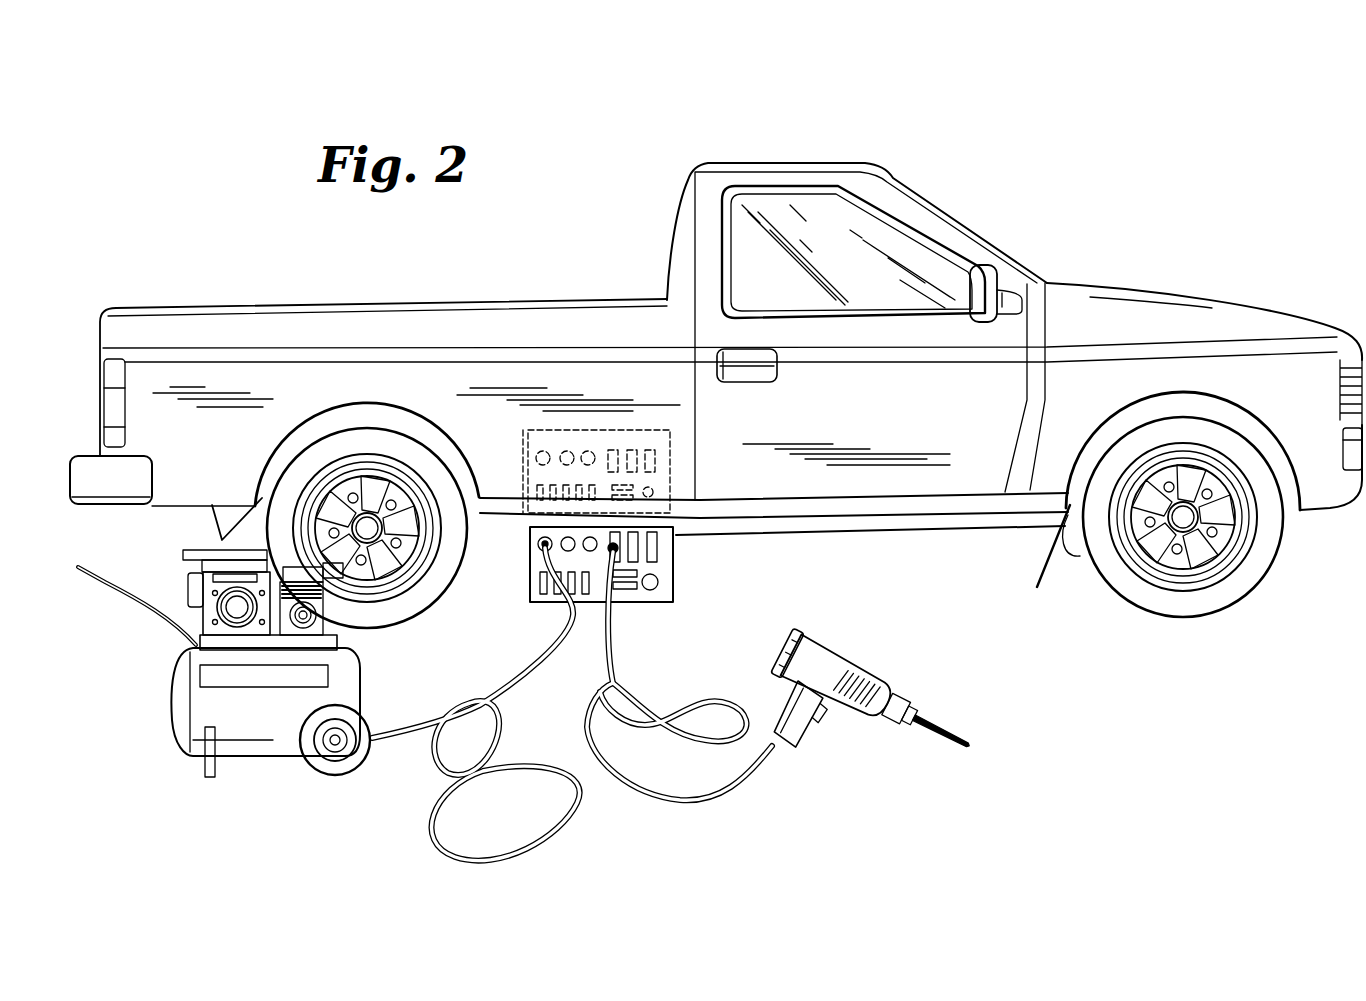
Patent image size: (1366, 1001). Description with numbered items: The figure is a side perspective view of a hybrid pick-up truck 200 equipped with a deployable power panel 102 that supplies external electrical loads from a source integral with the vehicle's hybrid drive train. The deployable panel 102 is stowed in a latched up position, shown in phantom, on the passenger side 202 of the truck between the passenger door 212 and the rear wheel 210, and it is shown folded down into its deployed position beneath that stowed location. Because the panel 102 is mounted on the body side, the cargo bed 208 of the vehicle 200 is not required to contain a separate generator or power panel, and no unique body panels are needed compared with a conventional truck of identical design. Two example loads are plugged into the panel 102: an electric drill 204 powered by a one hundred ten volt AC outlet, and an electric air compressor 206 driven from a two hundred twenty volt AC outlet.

The pick-up truck 200 is at (1118, 150).
The passenger side 202 is at (560, 322).
The cargo bed 208 is at (465, 303).
The rear wheel 210 is at (362, 527).
The passenger door 212 is at (893, 424).
The deployable power panel 102 is at (652, 603).
The electric drill 204 is at (873, 663).
The electric air compressor 206 is at (173, 694).